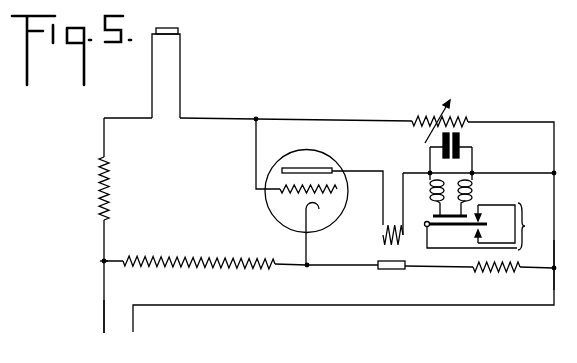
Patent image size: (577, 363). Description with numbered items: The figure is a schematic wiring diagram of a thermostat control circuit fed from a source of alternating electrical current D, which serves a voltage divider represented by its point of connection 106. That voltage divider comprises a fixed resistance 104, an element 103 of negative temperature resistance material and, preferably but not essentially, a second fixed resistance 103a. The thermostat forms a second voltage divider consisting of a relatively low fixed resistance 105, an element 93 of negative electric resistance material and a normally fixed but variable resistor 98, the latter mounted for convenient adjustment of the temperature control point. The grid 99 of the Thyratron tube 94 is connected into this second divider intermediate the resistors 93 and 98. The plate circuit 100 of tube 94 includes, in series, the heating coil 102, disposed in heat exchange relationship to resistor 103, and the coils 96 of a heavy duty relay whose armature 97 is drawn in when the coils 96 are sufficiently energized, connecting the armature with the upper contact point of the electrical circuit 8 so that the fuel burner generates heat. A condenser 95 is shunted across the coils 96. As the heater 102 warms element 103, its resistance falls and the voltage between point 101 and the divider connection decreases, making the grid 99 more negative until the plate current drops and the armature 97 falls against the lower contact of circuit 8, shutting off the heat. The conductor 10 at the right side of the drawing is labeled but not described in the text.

The element of negative electric resistance material 93 is at (166, 28).
The Thyratron tube 94 is at (321, 151).
The condenser 95 is at (461, 143).
The coils of heavy duty relay 96 is at (473, 191).
The armature 97 is at (440, 227).
The variable resistor 98 is at (454, 118).
The grid 99 is at (277, 190).
The plate circuit 100 is at (333, 171).
The point 101 is at (309, 246).
The heating coil 102 is at (383, 235).
The element of negative temperature resistance material 103 is at (385, 270).
The second fixed resistance 103a is at (481, 272).
The fixed resistance 104 is at (185, 259).
The relatively low fixed resistance 105 is at (108, 197).
The point of connection 106 is at (103, 261).
The conductor 10 is at (556, 268).
The electrical circuit 8 is at (504, 226).
The source of alternating electrical current D is at (95, 318).